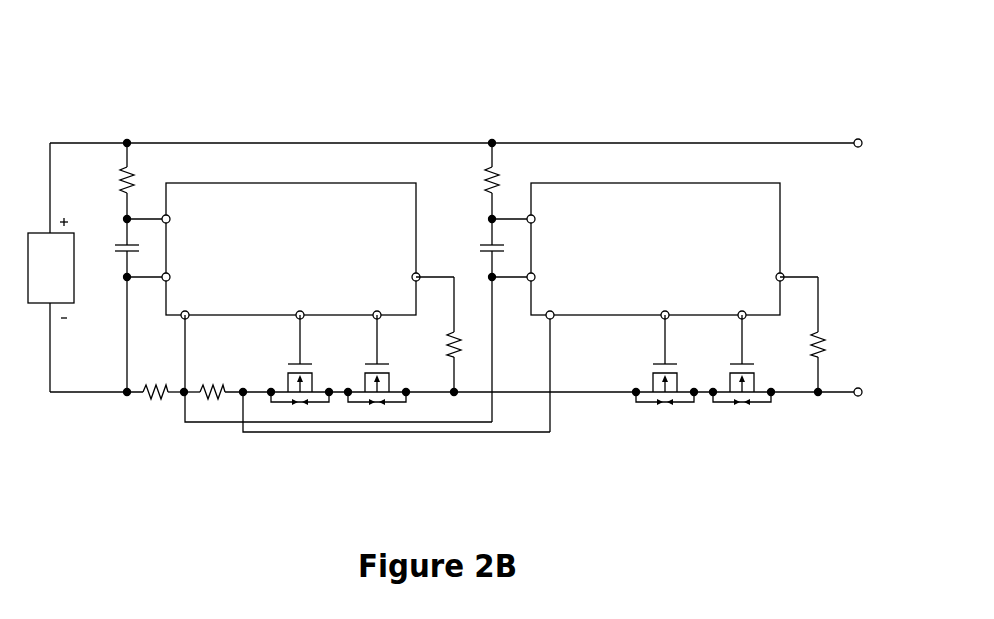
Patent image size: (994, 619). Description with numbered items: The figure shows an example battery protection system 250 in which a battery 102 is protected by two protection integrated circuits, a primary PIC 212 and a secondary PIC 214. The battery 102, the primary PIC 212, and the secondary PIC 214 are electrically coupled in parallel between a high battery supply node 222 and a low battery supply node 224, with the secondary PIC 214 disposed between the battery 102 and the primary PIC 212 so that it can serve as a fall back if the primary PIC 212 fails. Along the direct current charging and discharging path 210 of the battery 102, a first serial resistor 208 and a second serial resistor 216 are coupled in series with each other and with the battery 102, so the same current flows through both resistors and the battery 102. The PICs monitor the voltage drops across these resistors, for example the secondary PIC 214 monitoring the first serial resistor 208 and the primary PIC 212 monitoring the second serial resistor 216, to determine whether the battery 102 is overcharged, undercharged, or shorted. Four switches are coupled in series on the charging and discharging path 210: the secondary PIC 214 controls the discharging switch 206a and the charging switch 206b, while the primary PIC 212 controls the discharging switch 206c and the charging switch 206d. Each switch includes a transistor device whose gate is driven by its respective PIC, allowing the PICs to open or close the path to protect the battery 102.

The battery protection system 250 is at (646, 78).
The battery 102 is at (51, 268).
The charging and discharging path 210 is at (70, 398).
The first serial resistor 208 is at (150, 400).
The second serial resistor 216 is at (214, 378).
The secondary PIC 214 is at (291, 251).
The primary PIC 212 is at (655, 251).
The discharging switch 206a is at (305, 373).
The charging switch 206b is at (383, 373).
The discharging switch 206c is at (655, 411).
The charging switch 206d is at (745, 413).
The high battery supply node 222 is at (862, 148).
The low battery supply node 224 is at (862, 397).